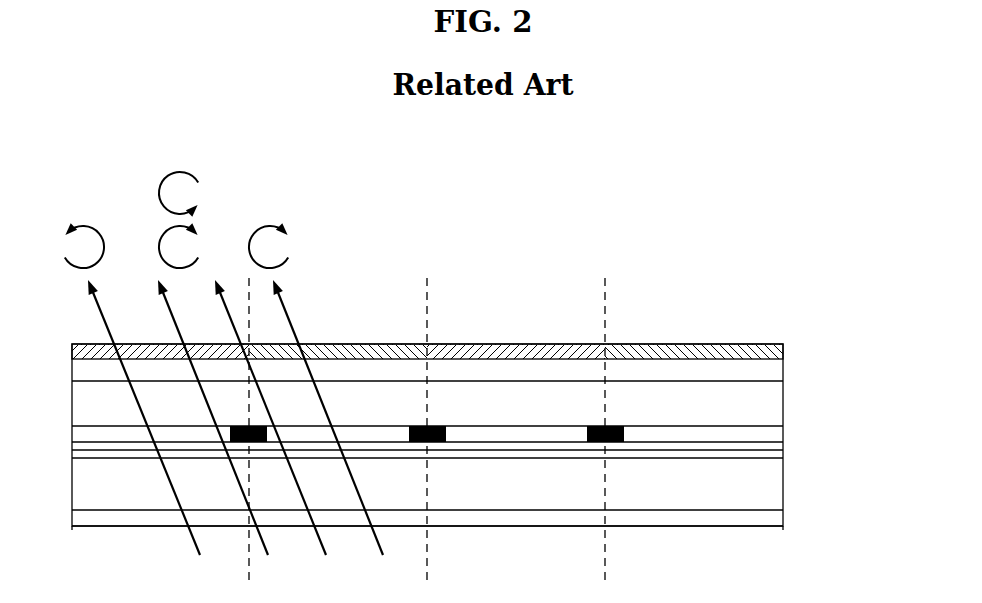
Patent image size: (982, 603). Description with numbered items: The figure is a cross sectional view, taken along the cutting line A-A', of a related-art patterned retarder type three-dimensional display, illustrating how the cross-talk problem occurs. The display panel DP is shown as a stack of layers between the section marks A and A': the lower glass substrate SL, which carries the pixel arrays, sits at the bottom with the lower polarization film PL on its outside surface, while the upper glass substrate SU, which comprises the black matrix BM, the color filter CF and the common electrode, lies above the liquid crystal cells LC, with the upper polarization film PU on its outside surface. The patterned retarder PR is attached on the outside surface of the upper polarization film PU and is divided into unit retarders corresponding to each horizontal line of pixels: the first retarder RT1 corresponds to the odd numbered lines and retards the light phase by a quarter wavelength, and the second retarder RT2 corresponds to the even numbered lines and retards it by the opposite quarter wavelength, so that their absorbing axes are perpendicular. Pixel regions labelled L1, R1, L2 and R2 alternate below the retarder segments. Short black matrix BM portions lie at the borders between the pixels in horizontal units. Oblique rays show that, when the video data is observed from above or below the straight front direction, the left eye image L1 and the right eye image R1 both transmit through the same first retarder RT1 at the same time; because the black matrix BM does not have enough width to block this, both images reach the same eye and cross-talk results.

The patterned retarder PR is at (790, 352).
The upper polarization film PU is at (783, 366).
The upper glass substrate SU is at (783, 392).
The black matrix BM is at (617, 426).
The color filter CF is at (783, 437).
The liquid crystal cell LC is at (783, 452).
The lower glass substrate SL is at (783, 484).
The lower polarization film PL is at (783, 518).
The display panel DP is at (855, 372).
The first retarder RT1 is at (128, 344).
The second retarder RT2 is at (350, 344).
The left eye image L1 is at (132, 393).
The right eye image R1 is at (316, 393).
The second left-eye pixel region L2 is at (477, 432).
The second right-eye pixel region R2 is at (655, 432).
The cutting line A-A' A is at (72, 539).
The cutting line A- A' is at (779, 539).